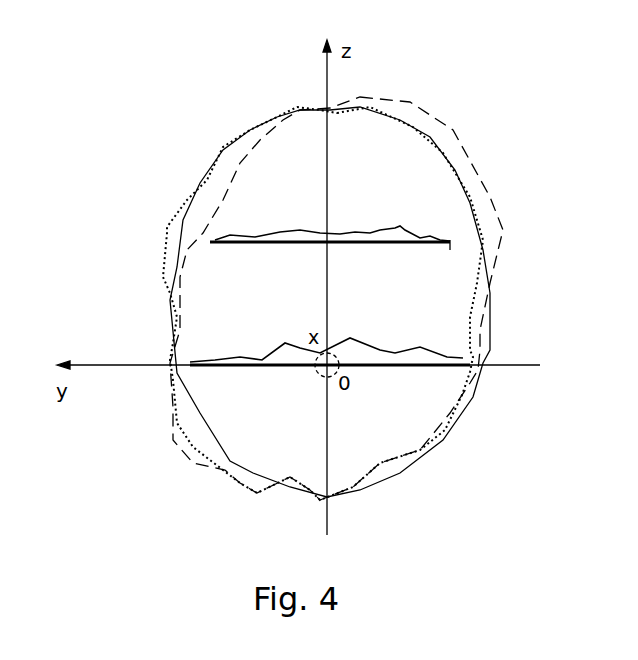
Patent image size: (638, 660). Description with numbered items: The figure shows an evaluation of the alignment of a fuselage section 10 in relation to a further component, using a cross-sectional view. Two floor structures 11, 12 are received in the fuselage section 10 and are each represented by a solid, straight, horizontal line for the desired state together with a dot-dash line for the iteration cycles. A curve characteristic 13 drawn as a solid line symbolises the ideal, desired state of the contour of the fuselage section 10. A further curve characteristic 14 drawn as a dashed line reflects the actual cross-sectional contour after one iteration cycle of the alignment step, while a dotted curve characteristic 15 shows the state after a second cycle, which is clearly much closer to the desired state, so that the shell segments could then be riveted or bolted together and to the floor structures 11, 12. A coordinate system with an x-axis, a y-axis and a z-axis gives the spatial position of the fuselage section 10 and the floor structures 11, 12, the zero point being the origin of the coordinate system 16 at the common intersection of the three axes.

The fuselage section 10 is at (440, 96).
The floor structure 11 is at (225, 262).
The floor structure 12 is at (225, 400).
The curve characteristic 13 is at (490, 317).
The curve characteristic 14 is at (497, 200).
The curve characteristic 15 is at (448, 157).
The origin of the coordinate system 16 is at (321, 378).